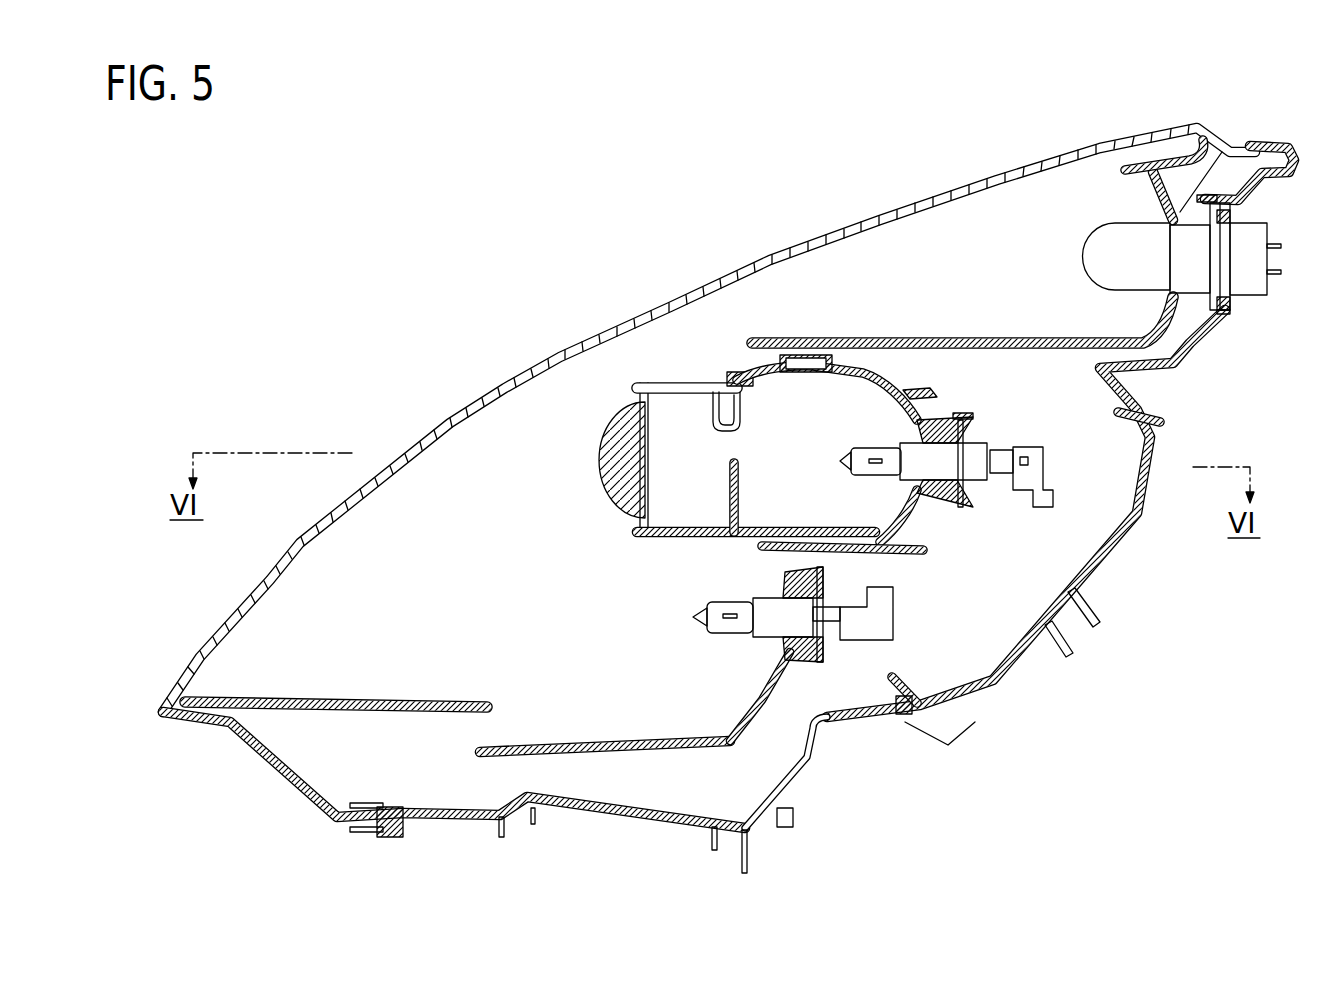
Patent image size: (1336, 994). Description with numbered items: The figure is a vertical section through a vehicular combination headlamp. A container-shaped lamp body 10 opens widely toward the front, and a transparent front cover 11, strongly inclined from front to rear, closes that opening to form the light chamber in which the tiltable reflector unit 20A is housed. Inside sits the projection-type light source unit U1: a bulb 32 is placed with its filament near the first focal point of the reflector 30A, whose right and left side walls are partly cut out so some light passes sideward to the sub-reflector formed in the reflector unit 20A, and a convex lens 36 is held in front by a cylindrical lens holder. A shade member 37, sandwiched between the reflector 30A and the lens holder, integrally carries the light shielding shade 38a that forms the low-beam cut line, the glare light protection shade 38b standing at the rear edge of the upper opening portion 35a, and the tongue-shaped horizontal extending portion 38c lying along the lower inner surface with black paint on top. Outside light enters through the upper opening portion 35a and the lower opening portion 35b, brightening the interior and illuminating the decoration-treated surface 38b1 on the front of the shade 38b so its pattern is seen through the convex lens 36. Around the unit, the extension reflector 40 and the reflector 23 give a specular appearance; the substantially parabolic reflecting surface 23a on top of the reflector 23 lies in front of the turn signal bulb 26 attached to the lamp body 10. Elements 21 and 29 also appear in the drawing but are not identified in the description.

The lamp body 10 is at (1187, 350).
The transparent front cover 11 is at (418, 446).
The reflector unit 20A is at (1000, 334).
The reflector of second lamp unit 21 is at (777, 687).
The reflector 23 is at (1205, 160).
The substantially parabolic reflecting surface 23a is at (1153, 205).
The bulb for a turn signal lamp 26 is at (1100, 228).
The bulb 29 is at (722, 625).
The reflector 30A is at (847, 360).
The bulb 32 is at (873, 449).
The upper opening portion 35a is at (700, 383).
The lower opening portion 35b is at (698, 536).
The convex lens 36 is at (597, 443).
The shade member 37 is at (742, 545).
The light shielding shade 38a is at (840, 528).
The glare light protection shade 38b is at (722, 382).
The decoration-treated surface 38b1 is at (736, 392).
The tongue-shaped horizontal extending portion 38c is at (737, 463).
The extension reflector 40 is at (265, 697).
The light source unit U1 is at (620, 386).